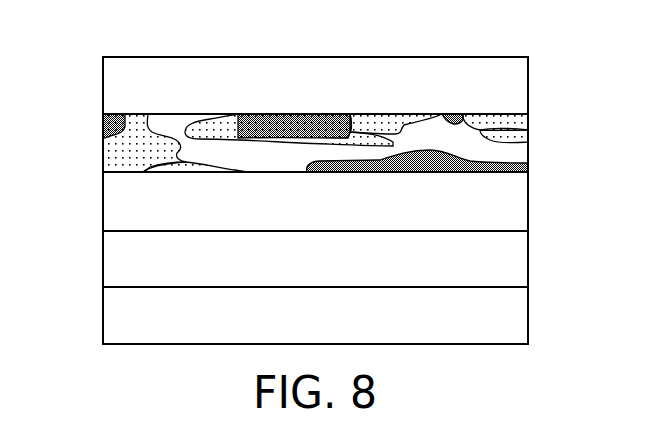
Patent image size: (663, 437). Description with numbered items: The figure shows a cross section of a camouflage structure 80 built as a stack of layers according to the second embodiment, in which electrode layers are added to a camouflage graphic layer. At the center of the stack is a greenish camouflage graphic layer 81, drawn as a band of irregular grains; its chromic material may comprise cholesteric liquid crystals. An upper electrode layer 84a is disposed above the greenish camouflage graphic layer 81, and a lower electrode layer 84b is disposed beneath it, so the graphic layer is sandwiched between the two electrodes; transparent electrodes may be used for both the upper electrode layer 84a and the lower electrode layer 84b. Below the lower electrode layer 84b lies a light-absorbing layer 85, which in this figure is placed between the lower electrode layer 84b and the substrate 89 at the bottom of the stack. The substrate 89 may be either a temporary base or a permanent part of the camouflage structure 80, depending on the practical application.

The camouflage structure 80 is at (68, 48).
The upper electrode layer 84a is at (513, 86).
The greenish camouflage graphic layer 81 is at (513, 150).
The lower electrode layer 84b is at (513, 202).
The light-absorbing layer 85 is at (513, 258).
The substrate 89 is at (513, 314).